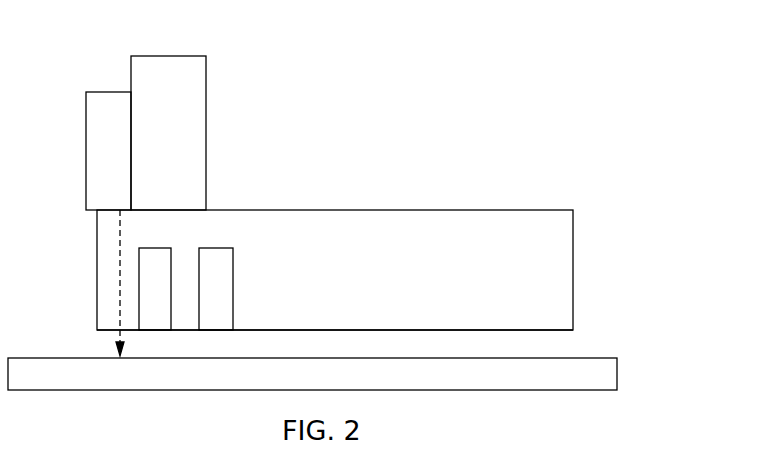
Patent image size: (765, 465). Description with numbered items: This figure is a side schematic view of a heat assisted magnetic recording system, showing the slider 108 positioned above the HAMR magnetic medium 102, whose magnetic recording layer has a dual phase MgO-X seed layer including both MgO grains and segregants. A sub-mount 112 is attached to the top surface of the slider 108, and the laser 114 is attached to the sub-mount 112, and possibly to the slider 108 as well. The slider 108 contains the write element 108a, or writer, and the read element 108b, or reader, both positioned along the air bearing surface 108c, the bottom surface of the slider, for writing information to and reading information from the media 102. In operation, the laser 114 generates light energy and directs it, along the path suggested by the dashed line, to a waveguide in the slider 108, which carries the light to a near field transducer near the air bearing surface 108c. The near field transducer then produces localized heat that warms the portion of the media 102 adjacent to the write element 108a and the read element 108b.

The HAMR magnetic medium 102 is at (617, 372).
The slider 108 is at (506, 210).
The write element 108a is at (142, 246).
The read element 108b is at (223, 247).
The air bearing surface 108c is at (562, 331).
The sub-mount 112 is at (183, 55).
The laser 114 is at (97, 91).